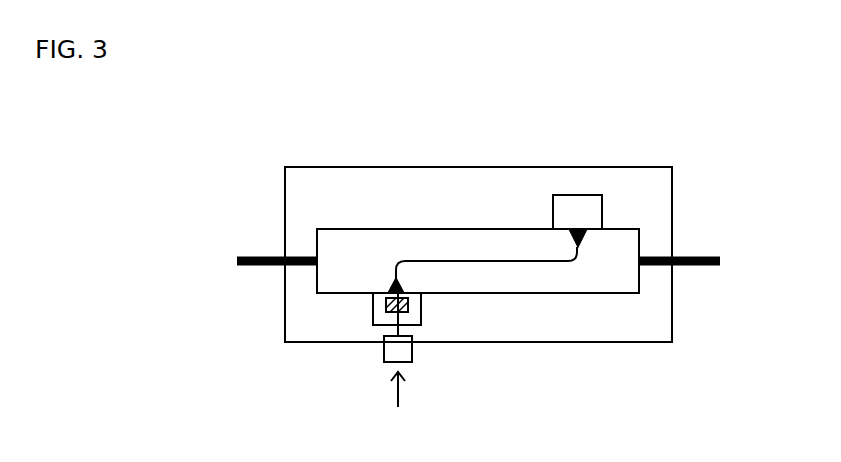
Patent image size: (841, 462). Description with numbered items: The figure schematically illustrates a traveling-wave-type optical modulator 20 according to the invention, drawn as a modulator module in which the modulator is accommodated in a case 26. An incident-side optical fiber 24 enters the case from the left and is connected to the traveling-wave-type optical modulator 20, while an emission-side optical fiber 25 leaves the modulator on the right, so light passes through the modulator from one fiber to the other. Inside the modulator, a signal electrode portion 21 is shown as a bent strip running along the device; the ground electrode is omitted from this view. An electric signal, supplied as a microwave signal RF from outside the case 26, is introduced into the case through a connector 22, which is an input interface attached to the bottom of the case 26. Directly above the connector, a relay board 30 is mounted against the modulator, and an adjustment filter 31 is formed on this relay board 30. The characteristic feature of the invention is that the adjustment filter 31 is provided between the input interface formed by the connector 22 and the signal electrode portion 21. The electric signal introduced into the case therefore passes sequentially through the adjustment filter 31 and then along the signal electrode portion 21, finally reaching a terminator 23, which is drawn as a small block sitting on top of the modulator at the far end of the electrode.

The traveling-wave-type optical modulator 20 is at (416, 228).
The signal electrode portion 21 is at (527, 262).
The connector 22 is at (383, 348).
The terminator 23 is at (579, 195).
The incident-side optical fiber 24 is at (264, 257).
The emission-side optical fiber 25 is at (697, 250).
The case 26 is at (633, 343).
The relay board 30 is at (373, 312).
The adjustment filter 31 is at (409, 308).